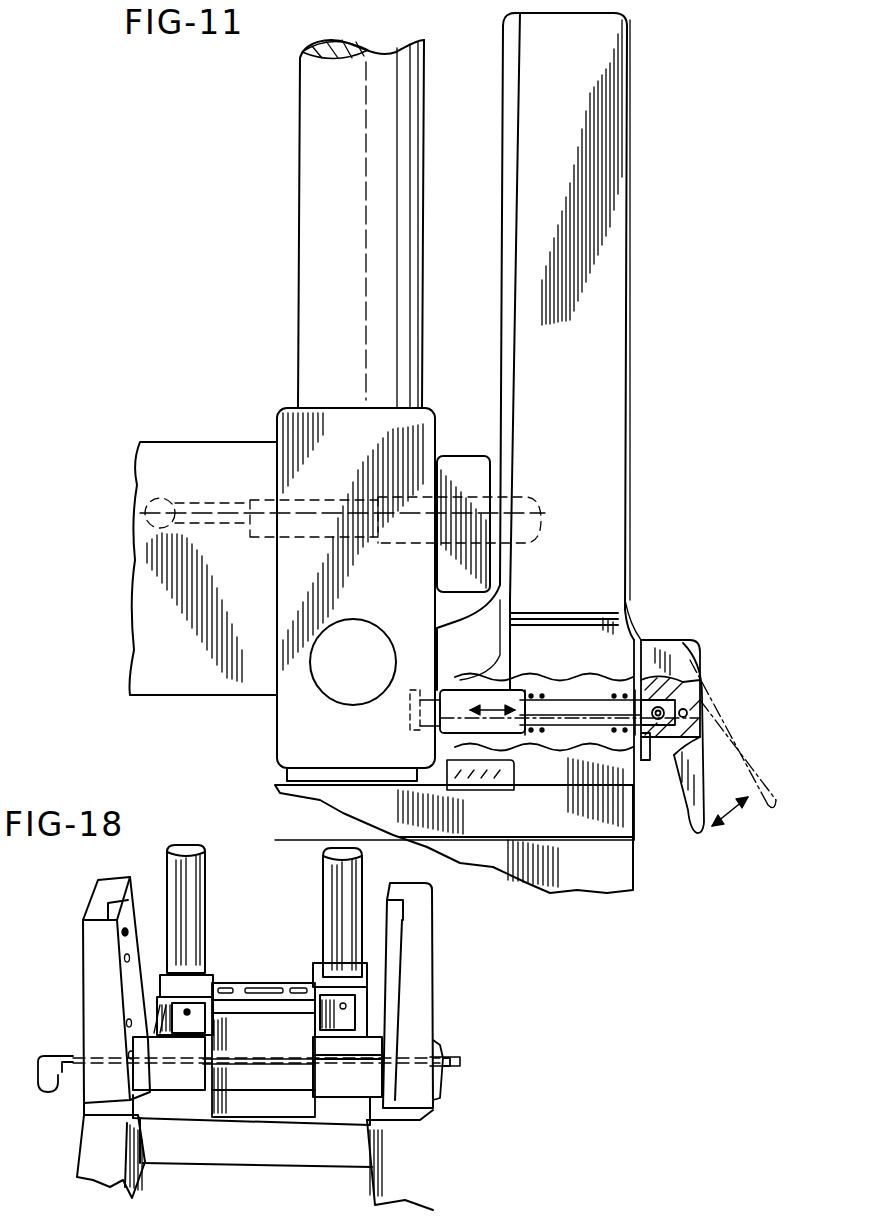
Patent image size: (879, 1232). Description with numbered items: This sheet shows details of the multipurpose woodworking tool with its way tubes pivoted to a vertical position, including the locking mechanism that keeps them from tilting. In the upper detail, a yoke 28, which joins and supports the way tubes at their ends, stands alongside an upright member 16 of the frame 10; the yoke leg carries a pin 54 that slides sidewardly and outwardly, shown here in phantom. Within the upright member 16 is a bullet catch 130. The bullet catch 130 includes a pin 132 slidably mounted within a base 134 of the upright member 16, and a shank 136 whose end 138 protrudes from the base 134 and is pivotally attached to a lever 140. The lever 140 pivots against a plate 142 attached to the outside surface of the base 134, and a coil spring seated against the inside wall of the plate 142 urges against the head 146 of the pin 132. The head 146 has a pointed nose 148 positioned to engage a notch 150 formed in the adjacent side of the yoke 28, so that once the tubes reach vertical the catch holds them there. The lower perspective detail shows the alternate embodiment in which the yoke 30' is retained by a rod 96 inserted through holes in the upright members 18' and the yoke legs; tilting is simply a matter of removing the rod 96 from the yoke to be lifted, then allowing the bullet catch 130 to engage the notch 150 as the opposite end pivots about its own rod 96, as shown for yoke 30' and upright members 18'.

In FIG. 18, the frame 10 is at (232, 1133).
In FIG. 11, the upright member 16 is at (602, 578).
In FIG. 18, the upright member 18' is at (86, 1037).
In FIG. 11, the yoke 28 is at (293, 727).
In FIG. 18, the yoke 30' is at (263, 1015).
In FIG. 11, the pin 54 is at (540, 518).
In FIG. 18, the rod 96 is at (70, 1047).
In FIG. 11, the bullet catch 130 is at (665, 636).
In FIG. 18, the bullet catch 130 is at (445, 1053).
In FIG. 11, the pin 132 is at (490, 690).
In FIG. 11, the base 134 is at (556, 812).
In FIG. 11, the shank 136 is at (577, 708).
In FIG. 11, the end 138 is at (654, 745).
In FIG. 11, the lever 140 is at (690, 657).
In FIG. 11, the plate 142 is at (642, 640).
In FIG. 11, the head 146 is at (482, 730).
In FIG. 11, the pointed nose 148 is at (416, 735).
In FIG. 11, the notch 150 is at (405, 698).